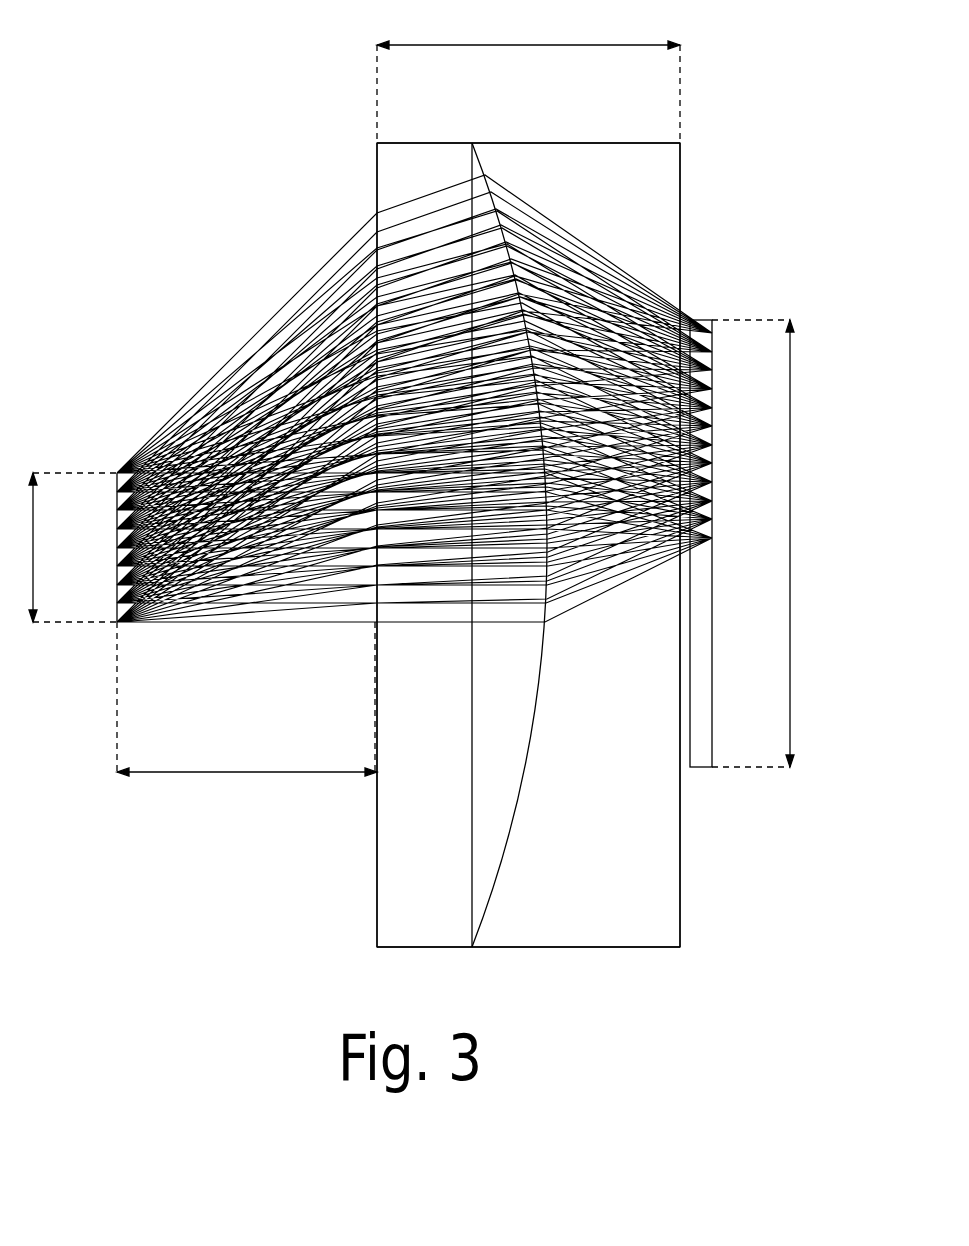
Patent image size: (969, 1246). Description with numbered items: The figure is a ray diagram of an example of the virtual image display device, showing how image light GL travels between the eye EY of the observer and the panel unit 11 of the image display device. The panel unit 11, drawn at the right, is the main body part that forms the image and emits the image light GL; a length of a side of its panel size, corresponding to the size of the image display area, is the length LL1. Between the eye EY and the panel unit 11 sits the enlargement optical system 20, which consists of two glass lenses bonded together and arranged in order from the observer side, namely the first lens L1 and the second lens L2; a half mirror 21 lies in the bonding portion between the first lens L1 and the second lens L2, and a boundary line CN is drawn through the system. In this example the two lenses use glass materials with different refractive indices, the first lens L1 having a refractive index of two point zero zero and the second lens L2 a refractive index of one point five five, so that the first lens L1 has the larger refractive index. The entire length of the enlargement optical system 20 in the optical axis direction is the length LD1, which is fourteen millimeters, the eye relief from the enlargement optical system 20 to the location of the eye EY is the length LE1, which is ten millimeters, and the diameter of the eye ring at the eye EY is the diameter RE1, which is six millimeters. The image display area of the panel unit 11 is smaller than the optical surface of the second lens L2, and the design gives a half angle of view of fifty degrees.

The enlargement optical system 20 is at (716, 135).
The first lens L1 is at (403, 829).
The second lens L2 is at (642, 873).
The half mirror 21 is at (530, 767).
The lens boundary / cemented surface CN is at (471, 142).
The panel unit 11 is at (727, 477).
The length of a side of the panel size LL1 is at (753, 543).
The entire length of the enlargement optical system LD1 is at (528, 80).
The length of the eye relief LE1 is at (247, 699).
The eye EY is at (115, 521).
The diameter of the eye ring RE1 is at (58, 547).
The image light GL is at (282, 299).